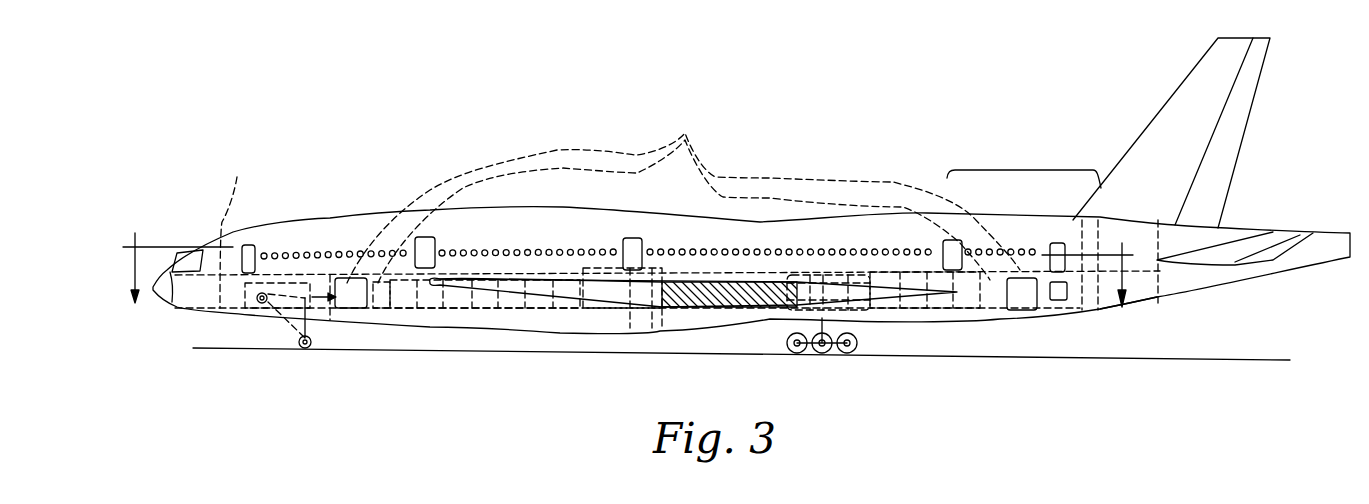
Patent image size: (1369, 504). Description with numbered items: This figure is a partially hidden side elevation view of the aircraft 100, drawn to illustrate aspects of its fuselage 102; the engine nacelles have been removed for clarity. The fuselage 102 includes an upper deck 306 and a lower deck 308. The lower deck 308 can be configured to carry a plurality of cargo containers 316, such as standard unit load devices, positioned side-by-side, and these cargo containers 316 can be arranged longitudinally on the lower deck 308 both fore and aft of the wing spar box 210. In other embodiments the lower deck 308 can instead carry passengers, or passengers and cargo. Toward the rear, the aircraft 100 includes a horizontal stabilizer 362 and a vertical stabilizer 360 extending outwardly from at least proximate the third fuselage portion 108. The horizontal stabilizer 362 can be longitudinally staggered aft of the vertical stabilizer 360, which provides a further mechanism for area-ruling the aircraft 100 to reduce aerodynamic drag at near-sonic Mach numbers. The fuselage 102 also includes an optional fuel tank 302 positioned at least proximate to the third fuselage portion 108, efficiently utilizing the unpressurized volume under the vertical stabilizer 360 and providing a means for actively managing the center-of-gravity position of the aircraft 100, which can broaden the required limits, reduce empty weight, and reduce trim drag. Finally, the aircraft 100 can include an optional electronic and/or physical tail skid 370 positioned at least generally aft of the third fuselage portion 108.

The aircraft 100 is at (188, 177).
The fuselage 102 is at (200, 247).
The third fuselage portion 108 is at (1023, 170).
The wing spar box 210 is at (713, 307).
The optional fuel tank 302 is at (1145, 285).
The upper deck 306 is at (236, 230).
The lower deck 308 is at (287, 320).
The cargo containers 316 is at (687, 133).
The vertical stabilizer 360 is at (1182, 85).
The horizontal stabilizer 362 is at (1230, 240).
The tail skid 370 is at (1142, 305).